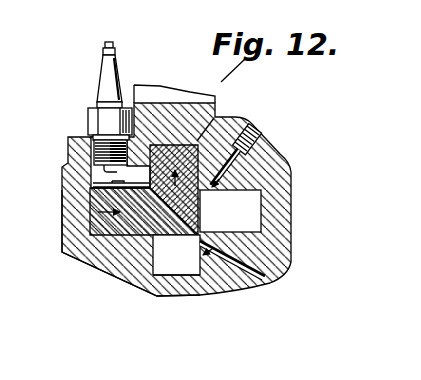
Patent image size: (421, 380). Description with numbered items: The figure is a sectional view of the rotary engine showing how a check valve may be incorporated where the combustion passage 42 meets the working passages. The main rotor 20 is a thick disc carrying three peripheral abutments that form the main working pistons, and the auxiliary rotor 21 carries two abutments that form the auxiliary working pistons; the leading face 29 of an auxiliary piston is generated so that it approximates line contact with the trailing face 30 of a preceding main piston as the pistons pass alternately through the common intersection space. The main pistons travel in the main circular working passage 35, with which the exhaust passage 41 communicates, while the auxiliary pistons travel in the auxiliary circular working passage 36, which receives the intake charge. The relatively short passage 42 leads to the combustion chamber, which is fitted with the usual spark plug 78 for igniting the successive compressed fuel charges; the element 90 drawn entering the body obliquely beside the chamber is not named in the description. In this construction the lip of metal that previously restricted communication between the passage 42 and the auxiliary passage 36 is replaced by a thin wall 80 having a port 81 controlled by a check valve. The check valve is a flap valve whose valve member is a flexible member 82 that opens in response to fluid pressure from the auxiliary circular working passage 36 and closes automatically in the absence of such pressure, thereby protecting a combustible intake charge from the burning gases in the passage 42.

The main rotor 20 is at (218, 117).
The auxiliary rotor 21 is at (86, 228).
The leading face 29 is at (183, 214).
The trailing face 30 is at (190, 228).
The main circular working passage 35 is at (157, 277).
The auxiliary circular working passage 36 is at (262, 191).
The exhaust passage 41 is at (252, 283).
The combustion passage 42 is at (140, 165).
The spark plug 78 is at (115, 75).
The thin wall 80 is at (110, 190).
The port 81 is at (127, 214).
The flexible member 82 is at (135, 183).
The fuel injector 90 is at (257, 137).